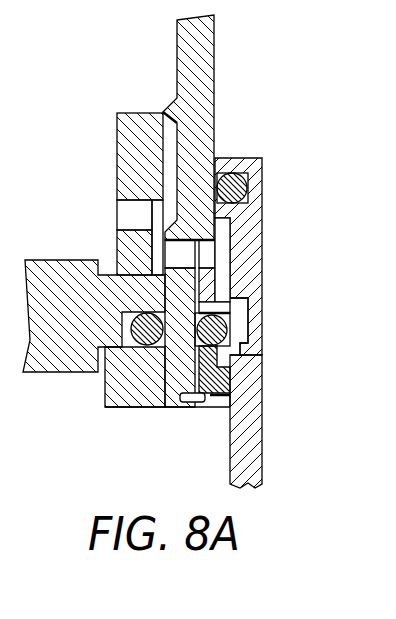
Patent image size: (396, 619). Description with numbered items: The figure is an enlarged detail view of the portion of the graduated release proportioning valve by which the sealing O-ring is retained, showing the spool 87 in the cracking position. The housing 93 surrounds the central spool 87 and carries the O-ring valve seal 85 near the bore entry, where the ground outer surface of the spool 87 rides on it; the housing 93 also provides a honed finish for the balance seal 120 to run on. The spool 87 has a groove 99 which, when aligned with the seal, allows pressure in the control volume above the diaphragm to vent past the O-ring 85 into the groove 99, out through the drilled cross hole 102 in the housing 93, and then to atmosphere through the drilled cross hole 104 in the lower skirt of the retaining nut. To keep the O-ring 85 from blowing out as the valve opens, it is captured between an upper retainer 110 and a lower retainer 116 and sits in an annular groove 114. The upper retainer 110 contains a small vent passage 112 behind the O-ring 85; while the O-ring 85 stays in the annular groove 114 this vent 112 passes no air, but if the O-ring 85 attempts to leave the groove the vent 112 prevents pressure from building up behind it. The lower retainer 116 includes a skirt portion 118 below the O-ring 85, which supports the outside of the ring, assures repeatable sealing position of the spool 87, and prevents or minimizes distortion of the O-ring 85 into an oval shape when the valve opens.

The housing 93 is at (178, 50).
The drilled cross hole 104 is at (133, 213).
The drilled cross hole 102 is at (179, 257).
The balance seal 120 is at (235, 175).
The groove 99 is at (220, 237).
The vent passage 112 is at (232, 292).
The upper retainer 110 is at (232, 290).
The annular groove 114 is at (242, 323).
The skirt portion 118 is at (230, 357).
The O-ring valve seal 85 is at (197, 328).
The lower retainer 116 is at (228, 340).
The spool 87 is at (263, 423).